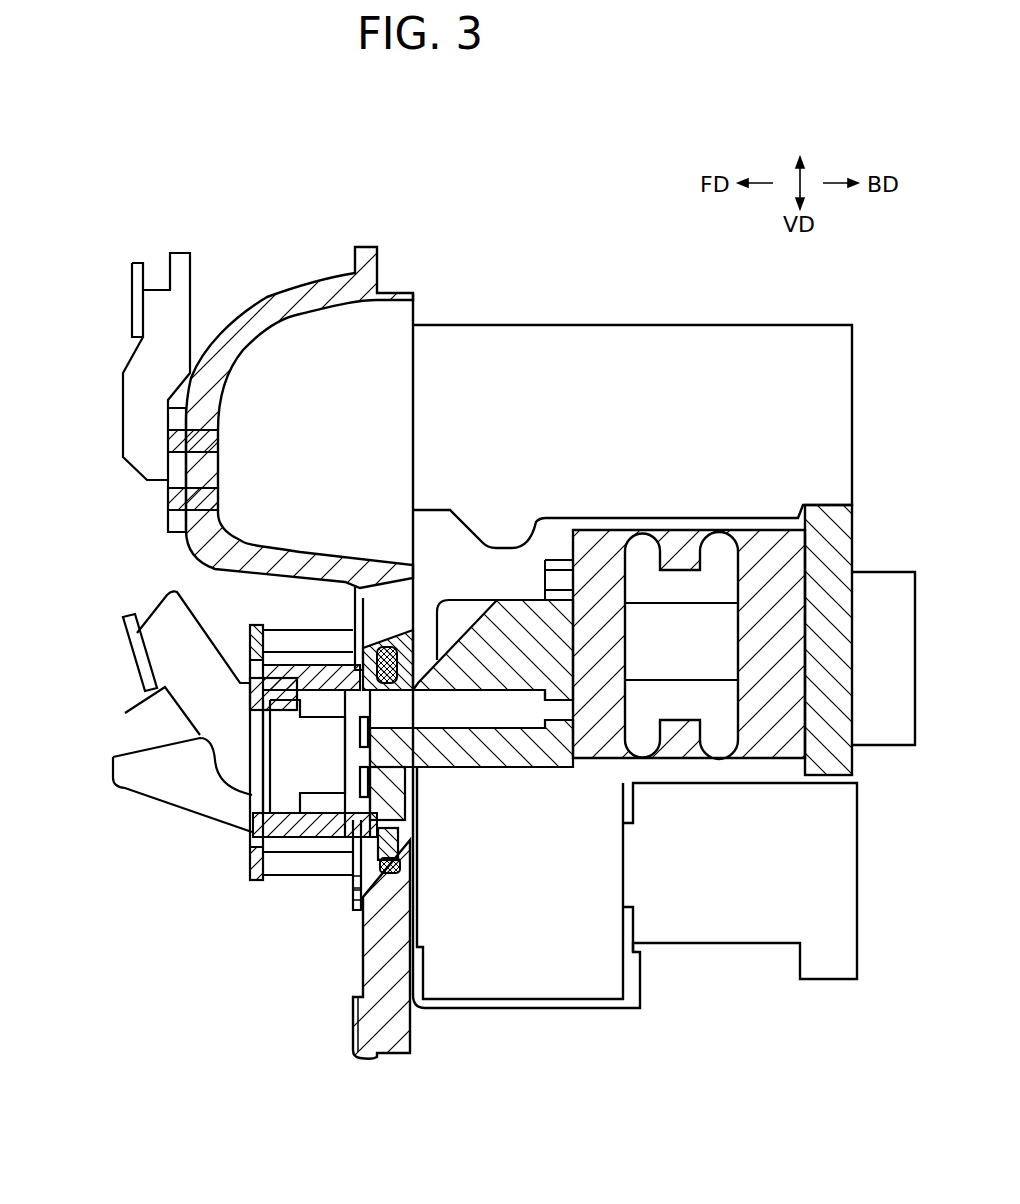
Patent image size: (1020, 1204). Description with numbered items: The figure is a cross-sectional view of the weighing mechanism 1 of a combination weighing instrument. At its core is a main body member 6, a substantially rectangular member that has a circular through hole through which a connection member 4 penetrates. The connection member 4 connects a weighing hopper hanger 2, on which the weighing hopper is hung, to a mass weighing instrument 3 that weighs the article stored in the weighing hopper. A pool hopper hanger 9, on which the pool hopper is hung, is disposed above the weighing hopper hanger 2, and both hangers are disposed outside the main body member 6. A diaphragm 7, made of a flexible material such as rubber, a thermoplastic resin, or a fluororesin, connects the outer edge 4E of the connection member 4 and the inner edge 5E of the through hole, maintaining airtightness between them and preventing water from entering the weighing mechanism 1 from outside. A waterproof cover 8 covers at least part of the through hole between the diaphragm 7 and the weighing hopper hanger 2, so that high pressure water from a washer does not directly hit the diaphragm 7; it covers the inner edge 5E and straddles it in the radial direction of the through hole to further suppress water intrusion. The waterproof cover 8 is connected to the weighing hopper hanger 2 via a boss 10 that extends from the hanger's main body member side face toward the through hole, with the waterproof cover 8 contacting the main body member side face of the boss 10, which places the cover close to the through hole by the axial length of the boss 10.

The weighing mechanism 1 is at (415, 214).
The weighing hopper hanger 2 is at (140, 650).
The mass weighing instrument 3 is at (767, 725).
The connection member 4 is at (350, 667).
The outer edge of the connection member 4E is at (352, 878).
The inner edge of the through hole 5E is at (354, 889).
The main body member 6 is at (362, 965).
The diaphragm 7 is at (383, 640).
The waterproof cover 8 is at (354, 881).
The pool hopper hanger 9 is at (143, 417).
The boss 10 is at (275, 863).